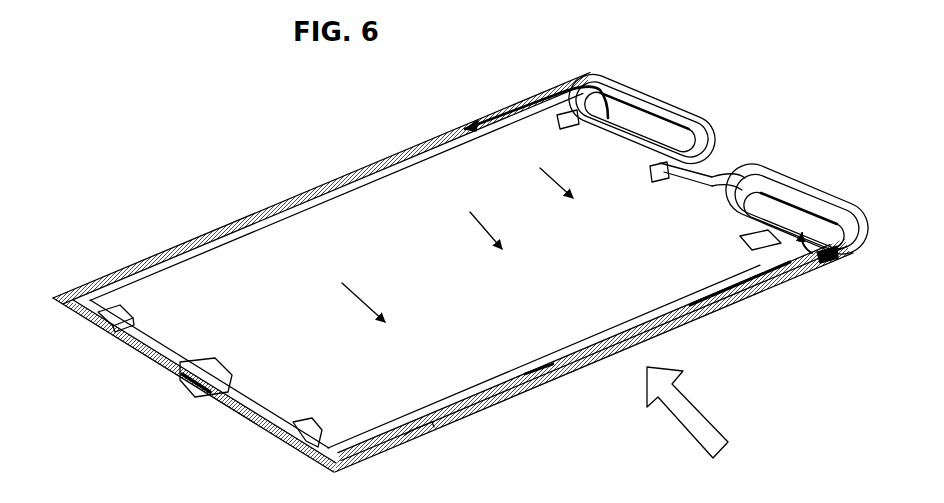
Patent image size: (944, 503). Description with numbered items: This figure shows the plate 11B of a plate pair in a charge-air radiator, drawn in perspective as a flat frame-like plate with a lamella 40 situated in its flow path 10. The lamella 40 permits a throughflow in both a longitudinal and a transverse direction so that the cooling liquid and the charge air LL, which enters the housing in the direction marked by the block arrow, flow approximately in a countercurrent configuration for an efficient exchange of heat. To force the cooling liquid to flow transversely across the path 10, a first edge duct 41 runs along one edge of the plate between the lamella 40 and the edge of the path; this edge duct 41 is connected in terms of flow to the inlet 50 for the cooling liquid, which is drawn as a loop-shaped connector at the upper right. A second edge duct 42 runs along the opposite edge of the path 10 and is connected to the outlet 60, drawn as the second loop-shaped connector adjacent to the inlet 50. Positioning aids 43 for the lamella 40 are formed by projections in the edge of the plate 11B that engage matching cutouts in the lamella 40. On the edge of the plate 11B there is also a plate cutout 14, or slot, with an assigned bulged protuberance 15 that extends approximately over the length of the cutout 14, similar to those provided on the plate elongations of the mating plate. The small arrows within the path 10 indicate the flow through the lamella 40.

The flow path 10 is at (424, 270).
The lamella 40 is at (452, 270).
The plate 11B is at (196, 216).
The first edge duct 41 is at (318, 187).
The second edge duct 42 is at (578, 363).
The positioning aid 43 is at (182, 375).
The plate cutout 14 is at (214, 396).
The bulged protuberance 15 is at (186, 380).
The inlet connector 50 is at (603, 72).
The outlet connector 60 is at (772, 192).
The charge air LL is at (678, 412).